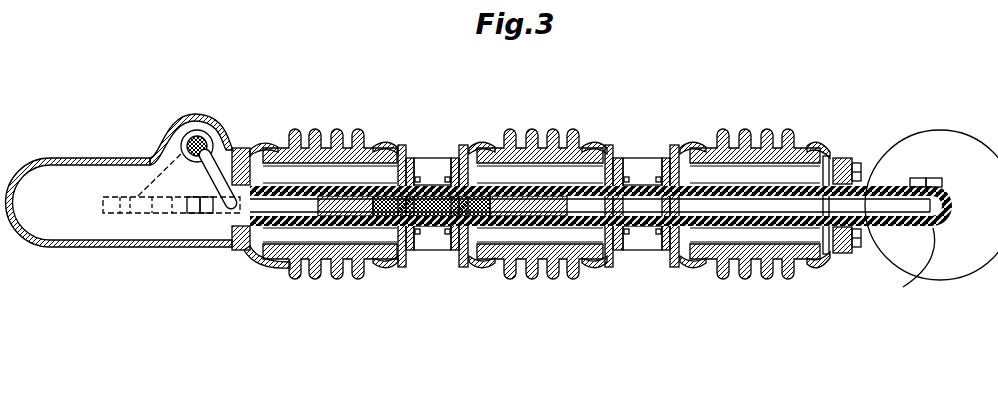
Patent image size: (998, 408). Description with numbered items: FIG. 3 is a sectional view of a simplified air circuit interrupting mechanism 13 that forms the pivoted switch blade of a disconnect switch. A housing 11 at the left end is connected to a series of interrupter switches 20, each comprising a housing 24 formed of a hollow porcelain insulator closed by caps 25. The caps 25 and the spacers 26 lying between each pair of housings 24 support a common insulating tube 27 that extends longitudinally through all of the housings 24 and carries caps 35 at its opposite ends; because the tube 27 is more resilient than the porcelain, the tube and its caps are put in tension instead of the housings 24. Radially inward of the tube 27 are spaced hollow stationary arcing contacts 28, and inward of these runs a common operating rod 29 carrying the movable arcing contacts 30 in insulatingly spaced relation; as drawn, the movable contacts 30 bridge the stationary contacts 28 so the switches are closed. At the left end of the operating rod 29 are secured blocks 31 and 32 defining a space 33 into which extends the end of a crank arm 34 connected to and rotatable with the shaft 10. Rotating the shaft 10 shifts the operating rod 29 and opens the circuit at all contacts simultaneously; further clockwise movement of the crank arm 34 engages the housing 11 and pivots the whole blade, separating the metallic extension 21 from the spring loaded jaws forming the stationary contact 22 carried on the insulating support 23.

The shaft 10 is at (200, 147).
The housing 11 is at (123, 248).
The air circuit interrupting mechanism 13 is at (314, 102).
The interrupter switch 20 is at (535, 124).
The metallic extension 21 is at (916, 267).
The stationary contact 22 is at (936, 178).
The insulating support 23 is at (958, 272).
The housing 24 is at (290, 265).
The cap 25 is at (262, 148).
The spacer 26 is at (432, 251).
The insulating tube 27 is at (312, 186).
The stationary arcing contact 28 is at (423, 185).
The operating rod 29 is at (247, 258).
The movable arcing contact 30 is at (333, 204).
The block 31 is at (237, 217).
The block 32 is at (207, 195).
The space 33 is at (202, 213).
The crank arm 34 is at (170, 165).
The cap 35 is at (230, 250).